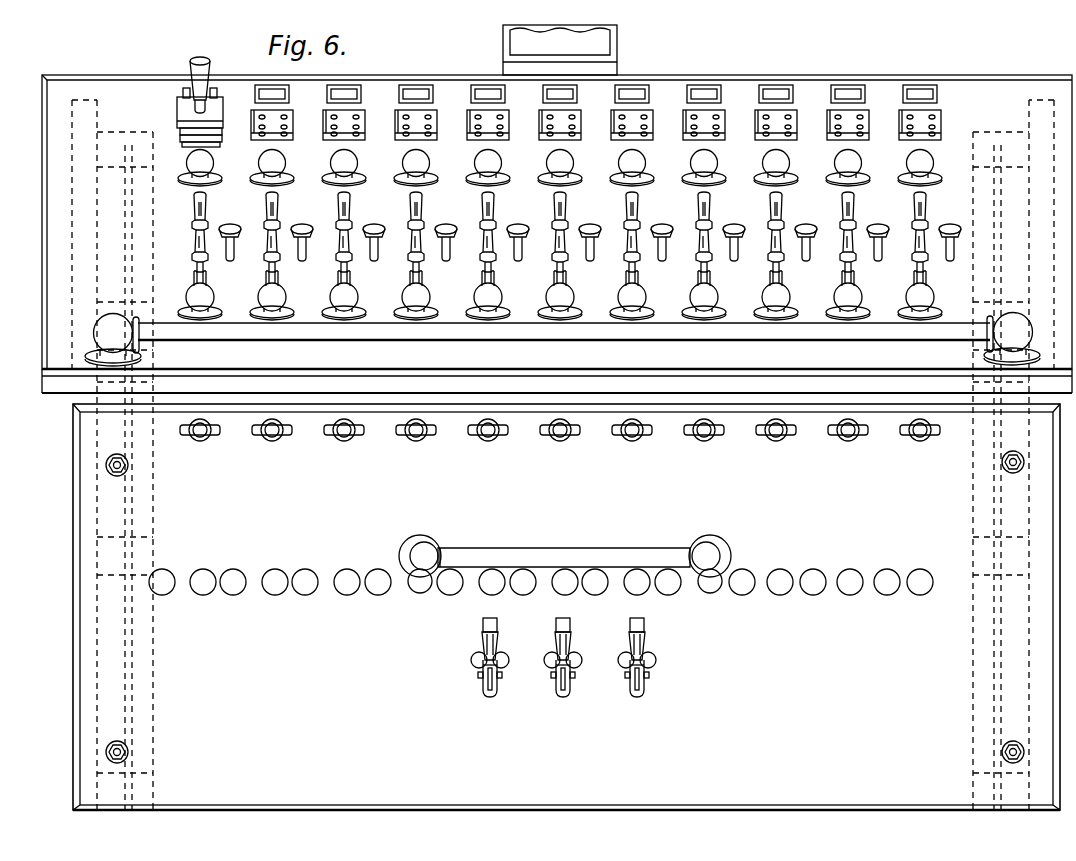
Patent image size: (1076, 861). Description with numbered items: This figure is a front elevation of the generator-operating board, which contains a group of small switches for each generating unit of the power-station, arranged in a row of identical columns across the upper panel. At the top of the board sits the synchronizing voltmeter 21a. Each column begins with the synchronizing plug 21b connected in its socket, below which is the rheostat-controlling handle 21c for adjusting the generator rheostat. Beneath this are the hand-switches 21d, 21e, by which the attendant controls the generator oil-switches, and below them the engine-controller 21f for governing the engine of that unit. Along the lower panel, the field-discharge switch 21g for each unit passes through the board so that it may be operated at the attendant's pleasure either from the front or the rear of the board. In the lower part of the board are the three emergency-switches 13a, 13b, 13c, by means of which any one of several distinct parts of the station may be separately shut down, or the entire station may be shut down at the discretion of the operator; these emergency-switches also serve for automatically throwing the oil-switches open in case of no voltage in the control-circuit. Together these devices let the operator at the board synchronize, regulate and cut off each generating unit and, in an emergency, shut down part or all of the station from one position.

The synchronizing voltmeter 21a is at (560, 50).
The synchronizing plug 21b is at (320, 116).
The rheostat-controlling handle 21c is at (262, 163).
The hand-switch 21d is at (265, 208).
The hand-switch 21e is at (200, 243).
The engine-controller 21f is at (196, 294).
The field-discharge switch 21g is at (210, 442).
The emergency-switch 13a is at (560, 637).
The emergency-switch 13b is at (488, 637).
The emergency-switch 13c is at (632, 637).